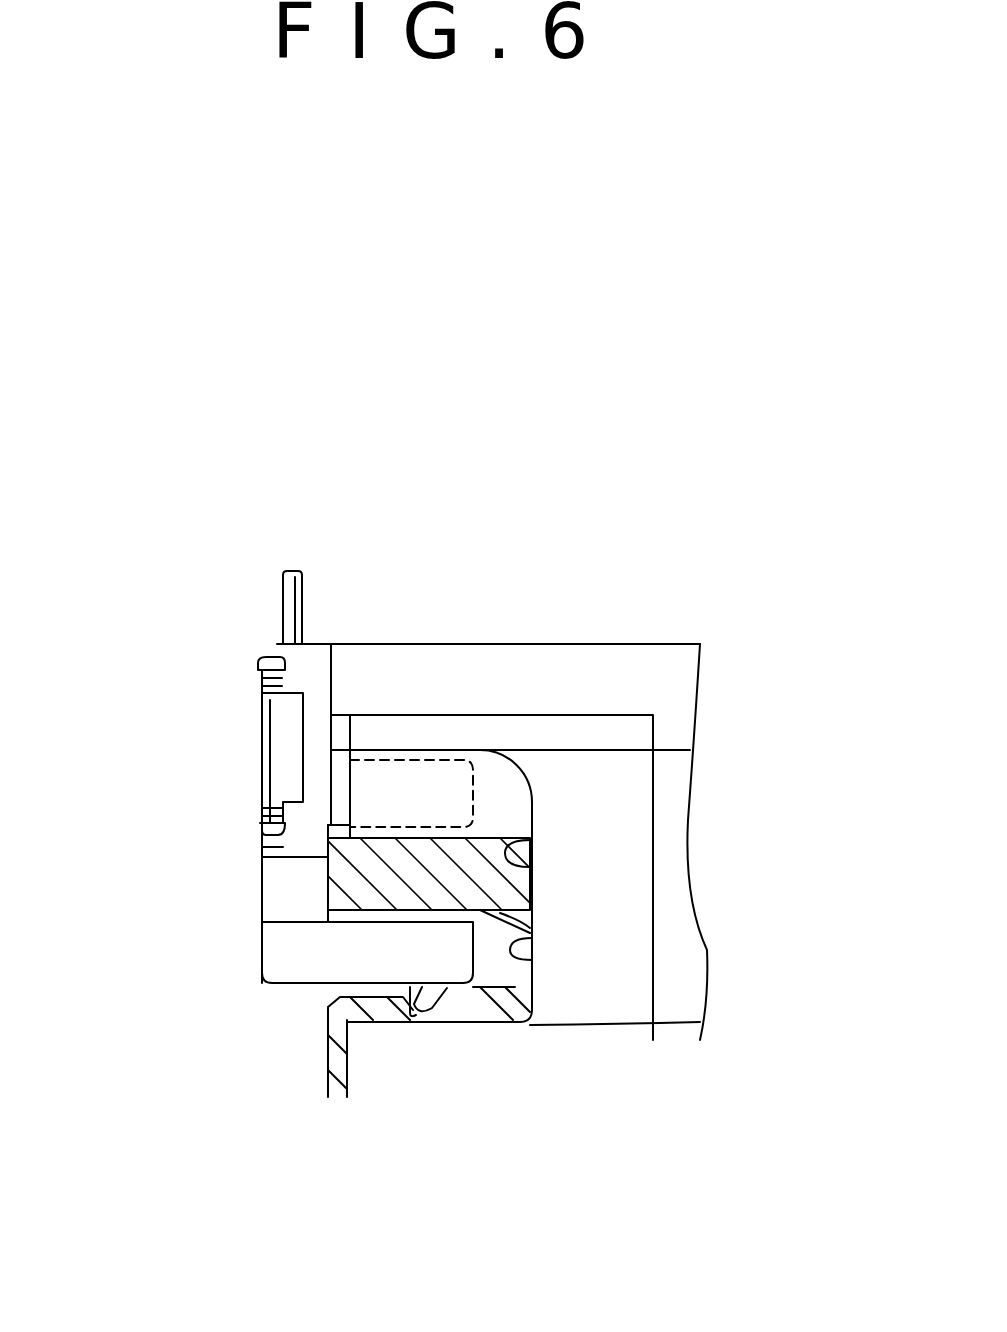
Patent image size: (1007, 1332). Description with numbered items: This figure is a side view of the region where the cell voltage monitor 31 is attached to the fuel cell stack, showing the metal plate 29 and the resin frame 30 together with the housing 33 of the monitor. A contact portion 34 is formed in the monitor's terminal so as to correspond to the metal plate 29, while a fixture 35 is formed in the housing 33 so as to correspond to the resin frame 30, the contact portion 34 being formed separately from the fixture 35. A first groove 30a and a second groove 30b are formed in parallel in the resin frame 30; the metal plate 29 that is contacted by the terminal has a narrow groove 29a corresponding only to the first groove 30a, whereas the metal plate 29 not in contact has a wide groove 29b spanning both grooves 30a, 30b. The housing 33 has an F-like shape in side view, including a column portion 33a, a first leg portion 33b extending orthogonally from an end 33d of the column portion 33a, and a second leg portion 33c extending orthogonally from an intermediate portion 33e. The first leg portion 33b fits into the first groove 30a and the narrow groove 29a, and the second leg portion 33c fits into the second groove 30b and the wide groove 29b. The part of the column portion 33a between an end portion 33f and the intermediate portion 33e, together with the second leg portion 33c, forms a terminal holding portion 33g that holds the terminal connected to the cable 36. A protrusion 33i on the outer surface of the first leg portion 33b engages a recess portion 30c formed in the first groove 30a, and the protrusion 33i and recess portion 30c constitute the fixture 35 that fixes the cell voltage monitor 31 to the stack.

The metal plate 29 is at (510, 778).
The narrow groove 29a is at (535, 957).
The wide groove 29b is at (530, 870).
The resin frame 30 is at (328, 1052).
The first groove 30a is at (530, 930).
The second groove 30b is at (487, 833).
The recess portion 30c is at (423, 1020).
The cell voltage monitor 31 is at (280, 876).
The housing 33 is at (280, 917).
The column portion 33a is at (283, 847).
The first leg portion 33b is at (403, 952).
The second leg portion 33c is at (400, 760).
The end 33d is at (287, 963).
The intermediate portion 33e is at (312, 742).
The end portion 33f is at (280, 647).
The terminal holding portion 33g is at (270, 703).
The protrusion 33i is at (428, 1022).
The contact portion 34 is at (453, 777).
The fixture 35 is at (700, 1022).
The cable 36 is at (286, 570).